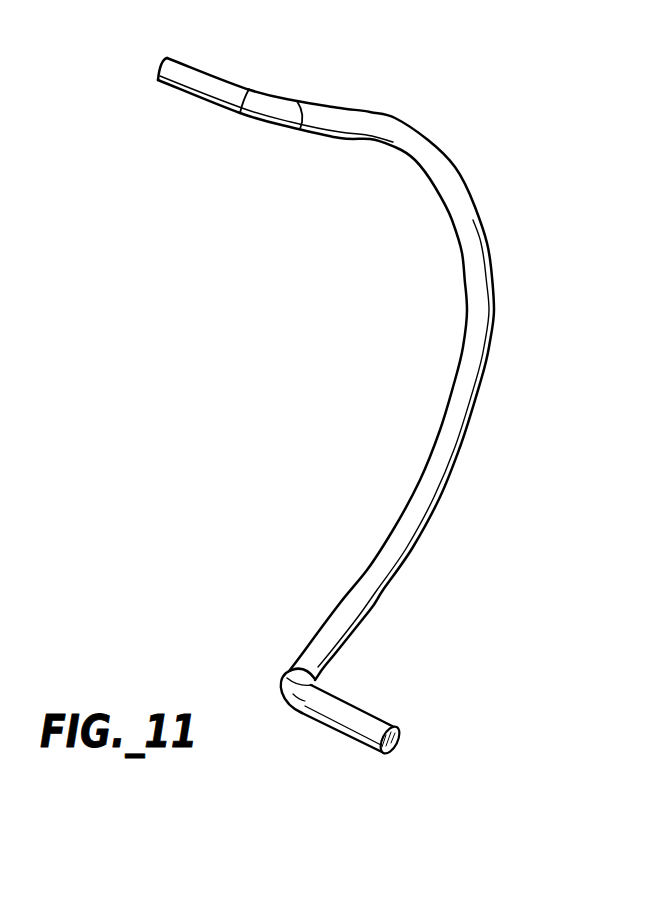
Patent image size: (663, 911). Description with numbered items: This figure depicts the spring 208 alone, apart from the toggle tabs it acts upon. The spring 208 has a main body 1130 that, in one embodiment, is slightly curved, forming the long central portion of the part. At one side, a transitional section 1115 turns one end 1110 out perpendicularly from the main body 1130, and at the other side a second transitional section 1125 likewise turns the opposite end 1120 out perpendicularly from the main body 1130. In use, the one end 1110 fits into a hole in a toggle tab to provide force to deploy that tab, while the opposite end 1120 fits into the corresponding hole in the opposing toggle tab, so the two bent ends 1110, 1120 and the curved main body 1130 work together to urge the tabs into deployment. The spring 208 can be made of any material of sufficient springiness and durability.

The spring 208 is at (192, 37).
The one end 1110 is at (212, 83).
The transitional section 1115 is at (278, 113).
The main body 1130 is at (477, 330).
The transitional section 1125 is at (291, 683).
The opposite end 1120 is at (357, 710).